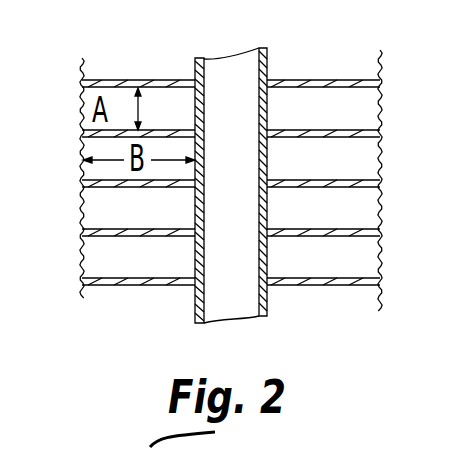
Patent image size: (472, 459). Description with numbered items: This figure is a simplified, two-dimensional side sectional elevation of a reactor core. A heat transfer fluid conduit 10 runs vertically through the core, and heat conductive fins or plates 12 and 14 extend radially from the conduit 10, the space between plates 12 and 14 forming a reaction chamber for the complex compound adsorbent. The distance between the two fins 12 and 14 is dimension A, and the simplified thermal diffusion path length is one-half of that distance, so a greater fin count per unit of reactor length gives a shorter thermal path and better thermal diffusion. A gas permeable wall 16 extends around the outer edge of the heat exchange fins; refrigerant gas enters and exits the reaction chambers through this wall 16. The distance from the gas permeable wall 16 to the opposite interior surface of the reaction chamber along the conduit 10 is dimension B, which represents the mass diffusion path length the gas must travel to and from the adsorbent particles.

The heat transfer fluid conduit 10 is at (268, 58).
The plate 12 is at (107, 79).
The plate 14 is at (82, 132).
The gas permeable wall 16 is at (82, 203).